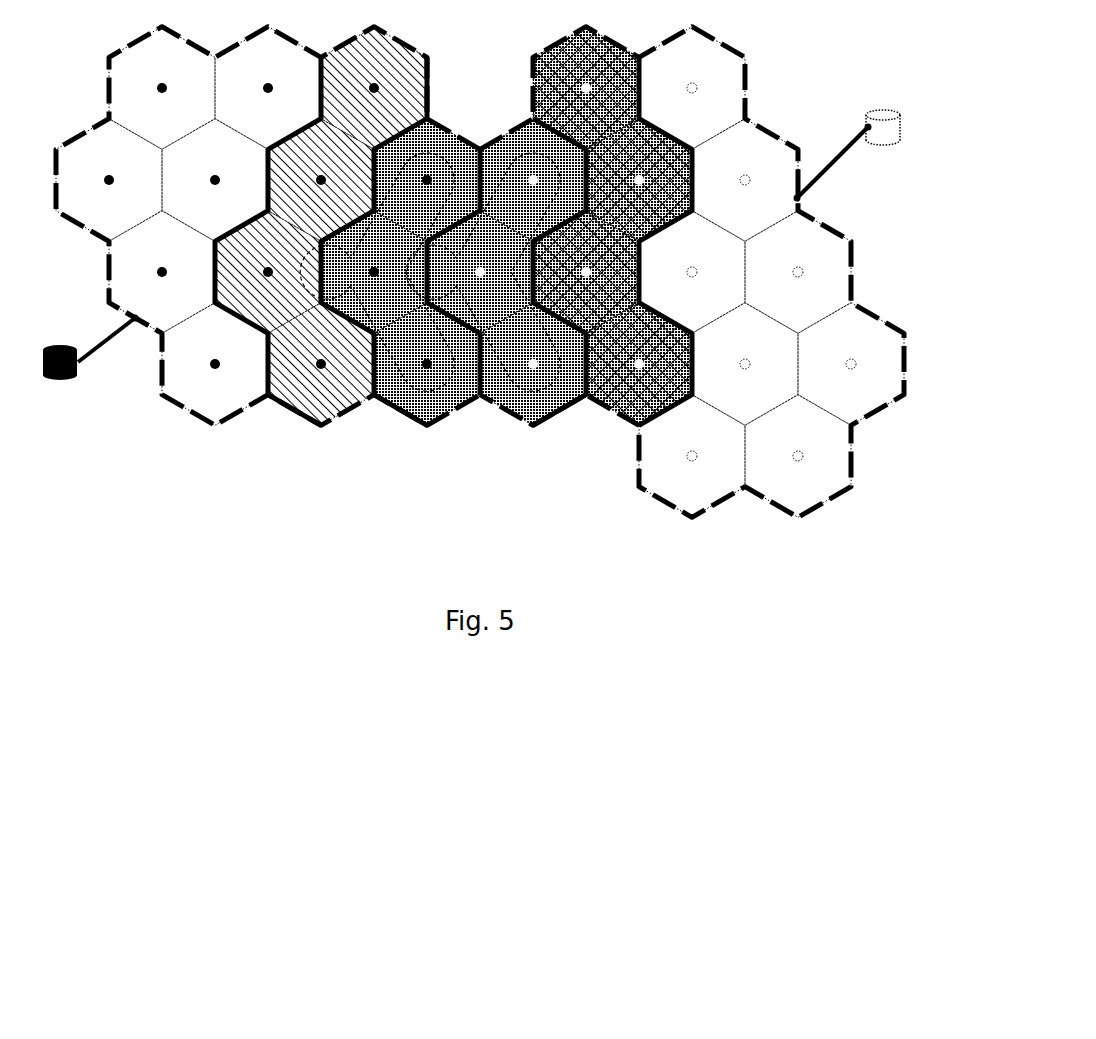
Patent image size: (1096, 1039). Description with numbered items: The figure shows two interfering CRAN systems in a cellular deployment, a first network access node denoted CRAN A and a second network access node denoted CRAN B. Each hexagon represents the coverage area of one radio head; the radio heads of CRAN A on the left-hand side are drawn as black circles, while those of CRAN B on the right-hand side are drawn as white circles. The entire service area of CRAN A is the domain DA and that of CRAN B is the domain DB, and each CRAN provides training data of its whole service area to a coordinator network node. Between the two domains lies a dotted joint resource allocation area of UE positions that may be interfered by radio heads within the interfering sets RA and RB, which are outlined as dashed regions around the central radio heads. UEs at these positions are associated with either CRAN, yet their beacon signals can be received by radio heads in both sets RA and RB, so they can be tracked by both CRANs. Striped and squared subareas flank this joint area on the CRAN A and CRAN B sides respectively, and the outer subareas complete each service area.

The service area of CRAN A DA is at (85, 131).
The service area of CRAN B DB is at (773, 132).
The set of radio heads of CRAN A RA is at (428, 152).
The set of radio heads of CRAN B RB is at (523, 160).
The first network access node CRAN A is at (84, 366).
The second network access node CRAN B is at (871, 156).